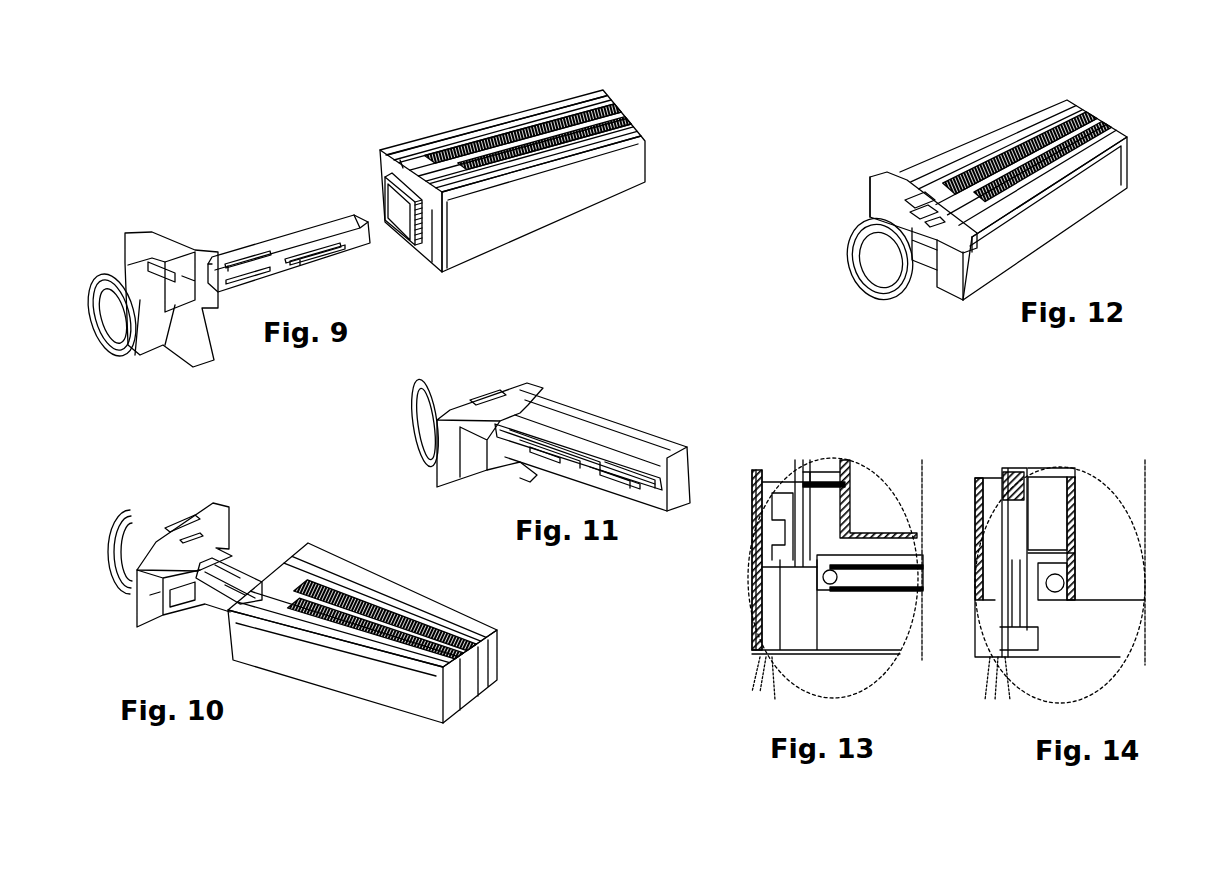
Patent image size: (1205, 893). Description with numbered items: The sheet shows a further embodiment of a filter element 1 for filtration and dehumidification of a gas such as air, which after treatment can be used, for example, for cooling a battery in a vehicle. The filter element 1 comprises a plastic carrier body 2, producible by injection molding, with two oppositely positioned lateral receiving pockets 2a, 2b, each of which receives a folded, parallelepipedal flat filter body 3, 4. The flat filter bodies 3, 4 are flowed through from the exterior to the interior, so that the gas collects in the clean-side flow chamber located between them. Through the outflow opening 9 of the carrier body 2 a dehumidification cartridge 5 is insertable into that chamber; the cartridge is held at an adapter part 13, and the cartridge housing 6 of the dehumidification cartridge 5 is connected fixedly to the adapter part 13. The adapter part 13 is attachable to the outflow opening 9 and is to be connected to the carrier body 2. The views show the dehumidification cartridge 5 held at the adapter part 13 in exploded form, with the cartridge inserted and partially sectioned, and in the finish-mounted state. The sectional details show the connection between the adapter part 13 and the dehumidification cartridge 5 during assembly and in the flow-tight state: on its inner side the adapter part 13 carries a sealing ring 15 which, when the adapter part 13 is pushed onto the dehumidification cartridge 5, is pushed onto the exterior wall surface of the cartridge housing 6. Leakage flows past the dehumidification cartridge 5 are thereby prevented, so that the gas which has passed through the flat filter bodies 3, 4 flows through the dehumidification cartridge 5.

In FIG. 9, the filter element 1 is at (438, 110).
In FIG. 12, the filter element 1 is at (934, 136).
In FIG. 10, the filter element 1 is at (329, 532).
In FIG. 11, the filter element 1 is at (621, 397).
In FIG. 9, the carrier body 2 is at (489, 126).
In FIG. 12, the carrier body 2 is at (1003, 135).
In FIG. 10, the carrier body 2 is at (360, 565).
In FIG. 11, the carrier body 2 is at (632, 422).
In FIG. 9, the receiving pocket 2a is at (556, 118).
In FIG. 9, the receiving pocket 2b is at (552, 160).
In FIG. 9, the flat filter body 3 is at (539, 112).
In FIG. 12, the flat filter body 3 is at (1030, 122).
In FIG. 10, the flat filter body 3 is at (383, 588).
In FIG. 11, the flat filter body 3 is at (640, 436).
In FIG. 9, the flat filter body 4 is at (540, 231).
In FIG. 12, the flat filter body 4 is at (1053, 232).
In FIG. 10, the flat filter body 4 is at (300, 670).
In FIG. 9, the dehumidification cartridge 5 is at (278, 239).
In FIG. 10, the dehumidification cartridge 5 is at (246, 566).
In FIG. 11, the dehumidification cartridge 5 is at (571, 414).
In FIG. 13, the dehumidification cartridge 5 is at (859, 466).
In FIG. 14, the dehumidification cartridge 5 is at (1084, 474).
In FIG. 9, the cartridge housing 6 is at (314, 228).
In FIG. 13, the cartridge housing 6 is at (857, 519).
In FIG. 14, the cartridge housing 6 is at (1078, 531).
In FIG. 9, the outflow opening 9 is at (405, 232).
In FIG. 9, the adapter part 13 is at (148, 229).
In FIG. 12, the adapter part 13 is at (850, 247).
In FIG. 10, the adapter part 13 is at (173, 520).
In FIG. 11, the adapter part 13 is at (473, 393).
In FIG. 13, the adapter part 13 is at (764, 660).
In FIG. 14, the adapter part 13 is at (980, 688).
In FIG. 13, the sealing ring 15 is at (835, 585).
In FIG. 14, the sealing ring 15 is at (1060, 595).